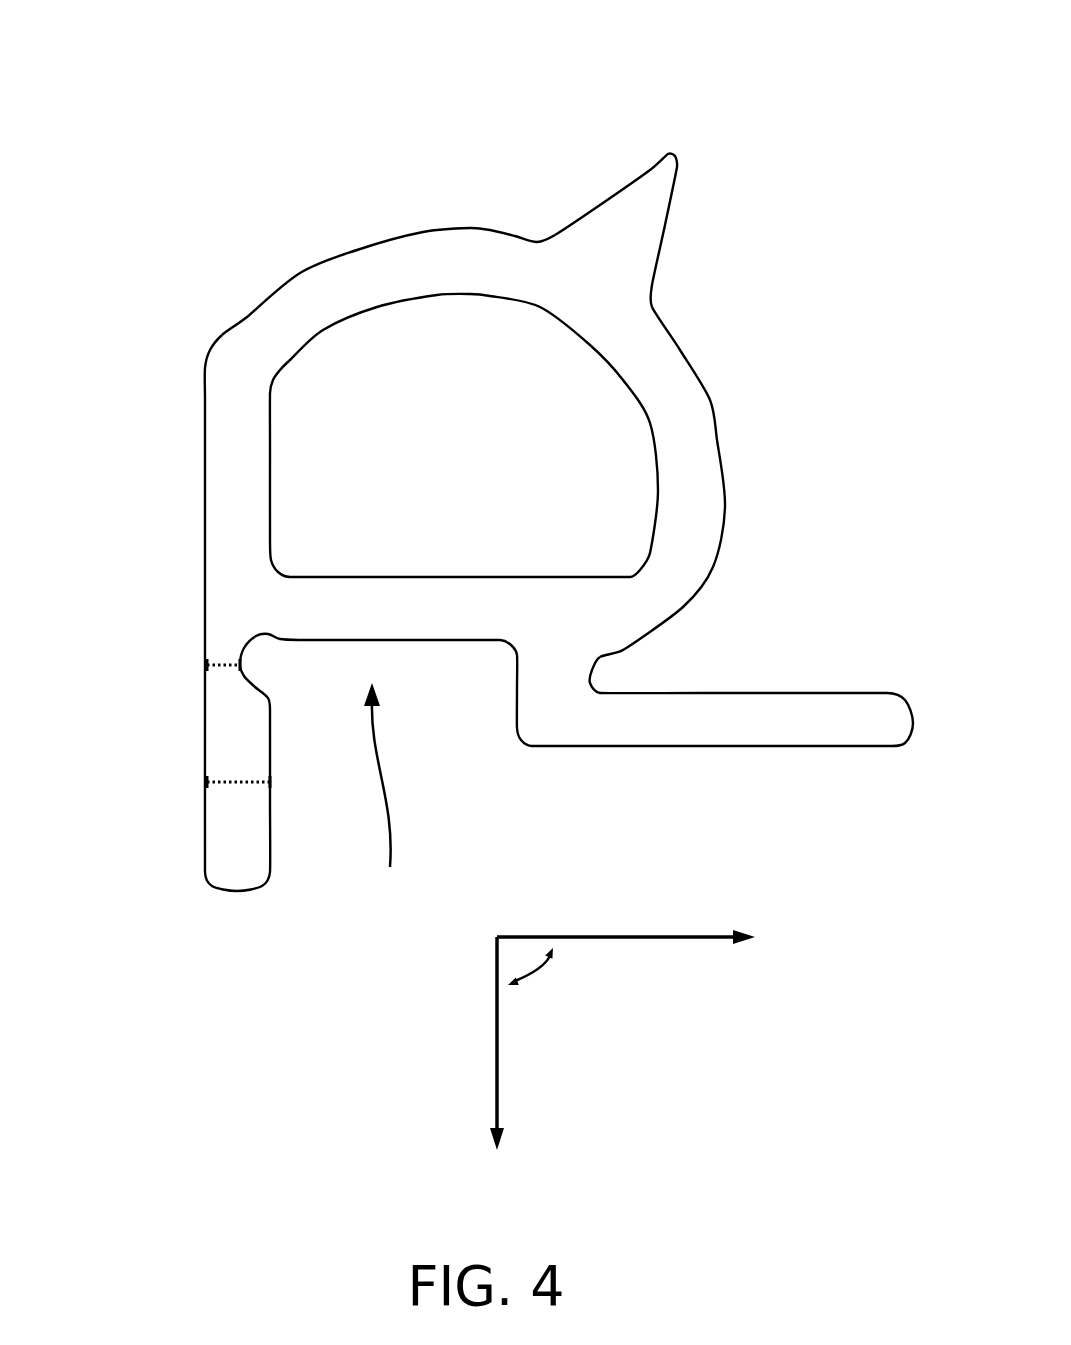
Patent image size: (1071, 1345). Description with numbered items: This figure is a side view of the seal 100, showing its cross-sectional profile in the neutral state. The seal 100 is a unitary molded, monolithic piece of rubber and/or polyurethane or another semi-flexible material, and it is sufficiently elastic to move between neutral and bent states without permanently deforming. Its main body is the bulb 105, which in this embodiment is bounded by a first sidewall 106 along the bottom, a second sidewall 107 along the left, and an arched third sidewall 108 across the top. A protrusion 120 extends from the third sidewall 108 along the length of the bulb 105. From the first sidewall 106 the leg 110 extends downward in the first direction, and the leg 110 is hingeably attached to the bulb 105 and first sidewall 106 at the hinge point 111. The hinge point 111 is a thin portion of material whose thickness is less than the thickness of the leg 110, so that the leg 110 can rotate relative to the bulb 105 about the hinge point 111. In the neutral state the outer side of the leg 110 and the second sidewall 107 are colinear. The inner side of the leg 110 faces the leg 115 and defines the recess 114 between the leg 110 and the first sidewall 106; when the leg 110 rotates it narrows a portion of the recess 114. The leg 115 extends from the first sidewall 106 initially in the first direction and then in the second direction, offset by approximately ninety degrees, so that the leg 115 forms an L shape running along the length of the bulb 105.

The seal 100 is at (172, 66).
The bulb 105 is at (194, 289).
The first sidewall 106 is at (463, 618).
The second sidewall 107 is at (223, 477).
The third sidewall 108 is at (446, 246).
The leg 110 is at (240, 872).
The hinge point 111 is at (247, 650).
The recess 114 is at (383, 794).
The leg 115 is at (748, 728).
The protrusion 120 is at (655, 200).